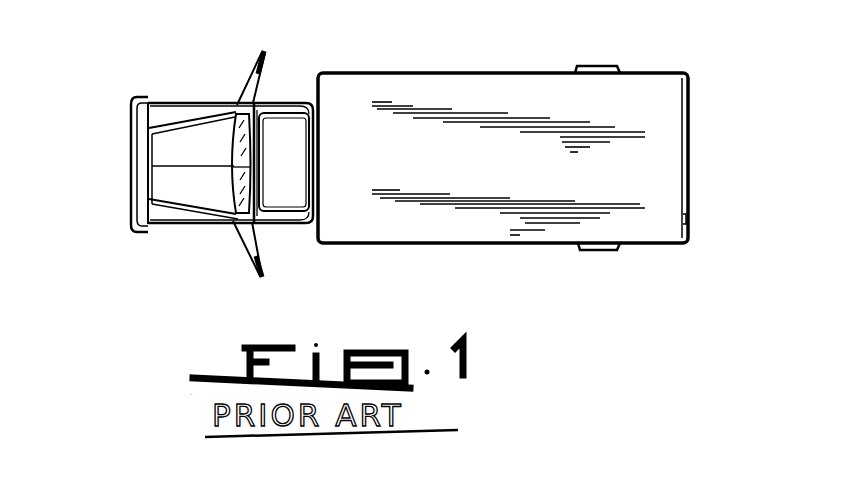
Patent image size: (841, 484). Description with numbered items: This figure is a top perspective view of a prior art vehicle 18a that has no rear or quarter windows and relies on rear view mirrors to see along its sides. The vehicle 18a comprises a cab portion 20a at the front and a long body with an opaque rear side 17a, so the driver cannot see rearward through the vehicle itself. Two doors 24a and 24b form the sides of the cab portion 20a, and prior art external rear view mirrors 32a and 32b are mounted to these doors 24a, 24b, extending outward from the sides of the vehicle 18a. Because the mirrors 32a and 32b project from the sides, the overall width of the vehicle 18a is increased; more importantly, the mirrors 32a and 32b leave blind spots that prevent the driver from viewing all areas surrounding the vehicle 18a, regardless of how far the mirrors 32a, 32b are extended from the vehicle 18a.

The opaque rear side 17a is at (688, 219).
The vehicle 18a is at (469, 98).
The cab portion 20a is at (183, 188).
The door 24a is at (280, 227).
The door 24b is at (306, 100).
The external rear view mirror 32a is at (262, 50).
The external rear view mirror 32b is at (260, 276).